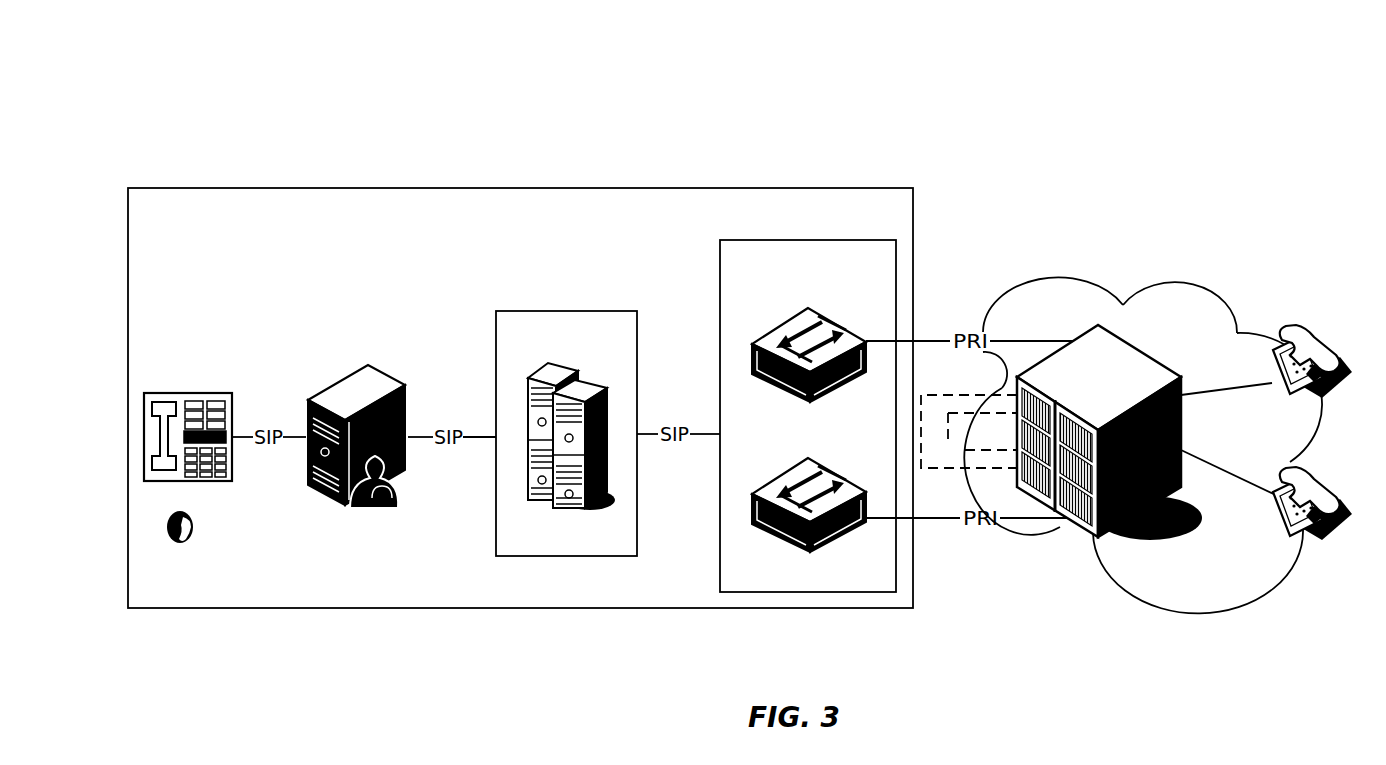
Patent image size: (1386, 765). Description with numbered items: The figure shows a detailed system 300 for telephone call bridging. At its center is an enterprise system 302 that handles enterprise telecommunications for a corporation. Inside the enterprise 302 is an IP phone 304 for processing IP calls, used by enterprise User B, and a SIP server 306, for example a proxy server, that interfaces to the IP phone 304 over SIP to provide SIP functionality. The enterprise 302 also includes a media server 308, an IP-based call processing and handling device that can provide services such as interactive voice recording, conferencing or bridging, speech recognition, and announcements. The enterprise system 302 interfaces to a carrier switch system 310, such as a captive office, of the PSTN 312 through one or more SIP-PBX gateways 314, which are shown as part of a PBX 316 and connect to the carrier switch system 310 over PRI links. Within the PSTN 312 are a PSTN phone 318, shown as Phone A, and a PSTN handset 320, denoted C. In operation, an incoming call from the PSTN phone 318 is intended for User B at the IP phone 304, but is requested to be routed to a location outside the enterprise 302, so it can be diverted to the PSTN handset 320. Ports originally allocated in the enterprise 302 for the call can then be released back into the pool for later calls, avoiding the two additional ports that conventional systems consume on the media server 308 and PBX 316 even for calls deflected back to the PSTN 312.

The system 300 is at (1201, 38).
The enterprise system 302 is at (518, 188).
The IP phone 304 is at (188, 393).
The SIP server 306 is at (392, 385).
The media server 308 is at (568, 311).
The carrier switch system 310 is at (1150, 357).
The PSTN 312 is at (1190, 262).
The SIP-PBX gateways 314 is at (820, 290).
The PBX 316 is at (808, 240).
The PSTN phone 318 is at (1290, 325).
The PSTN handset 320 is at (1290, 468).